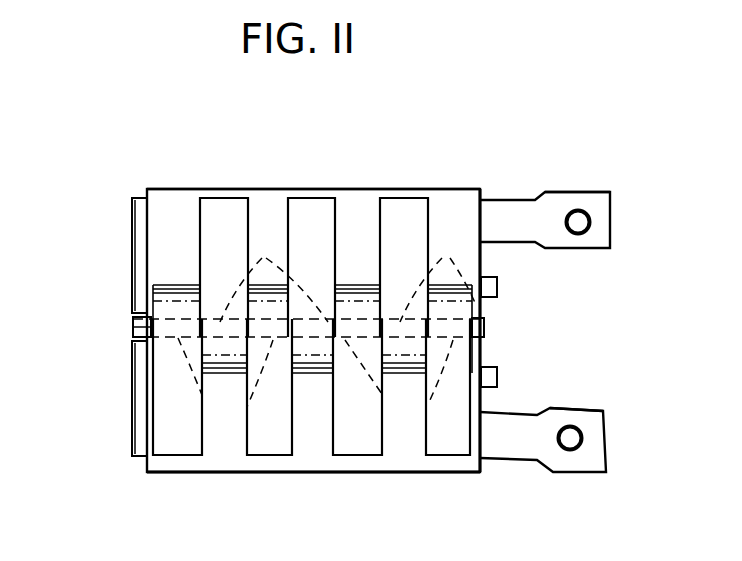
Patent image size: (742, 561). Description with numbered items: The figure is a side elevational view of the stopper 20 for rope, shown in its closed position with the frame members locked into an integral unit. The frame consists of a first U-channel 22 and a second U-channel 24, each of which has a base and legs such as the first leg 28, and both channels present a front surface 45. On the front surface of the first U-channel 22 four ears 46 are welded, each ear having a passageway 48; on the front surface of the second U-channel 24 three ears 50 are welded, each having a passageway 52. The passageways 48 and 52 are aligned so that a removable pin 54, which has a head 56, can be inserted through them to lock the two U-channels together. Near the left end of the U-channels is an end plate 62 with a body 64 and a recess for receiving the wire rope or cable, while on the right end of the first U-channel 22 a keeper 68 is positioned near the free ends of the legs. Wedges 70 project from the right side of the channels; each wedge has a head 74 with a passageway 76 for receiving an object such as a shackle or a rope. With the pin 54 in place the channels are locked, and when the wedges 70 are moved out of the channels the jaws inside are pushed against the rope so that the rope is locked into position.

The stopper 20 is at (157, 184).
The first U-channel 22 is at (418, 481).
The second U-channel 24 is at (228, 160).
The first leg 28 is at (350, 218).
The front surface 45 is at (263, 210).
The ears 46 is at (192, 436).
The passageway 48 is at (314, 410).
The ears 50 is at (240, 236).
The passageway 52 is at (327, 317).
The pin 54 is at (133, 327).
The head 56 is at (485, 333).
The end plate 62 is at (134, 226).
The body 64 is at (134, 268).
The keeper 68 is at (497, 288).
The wedge 70 is at (528, 238).
The head 74 is at (578, 164).
The passageway 76 is at (584, 223).